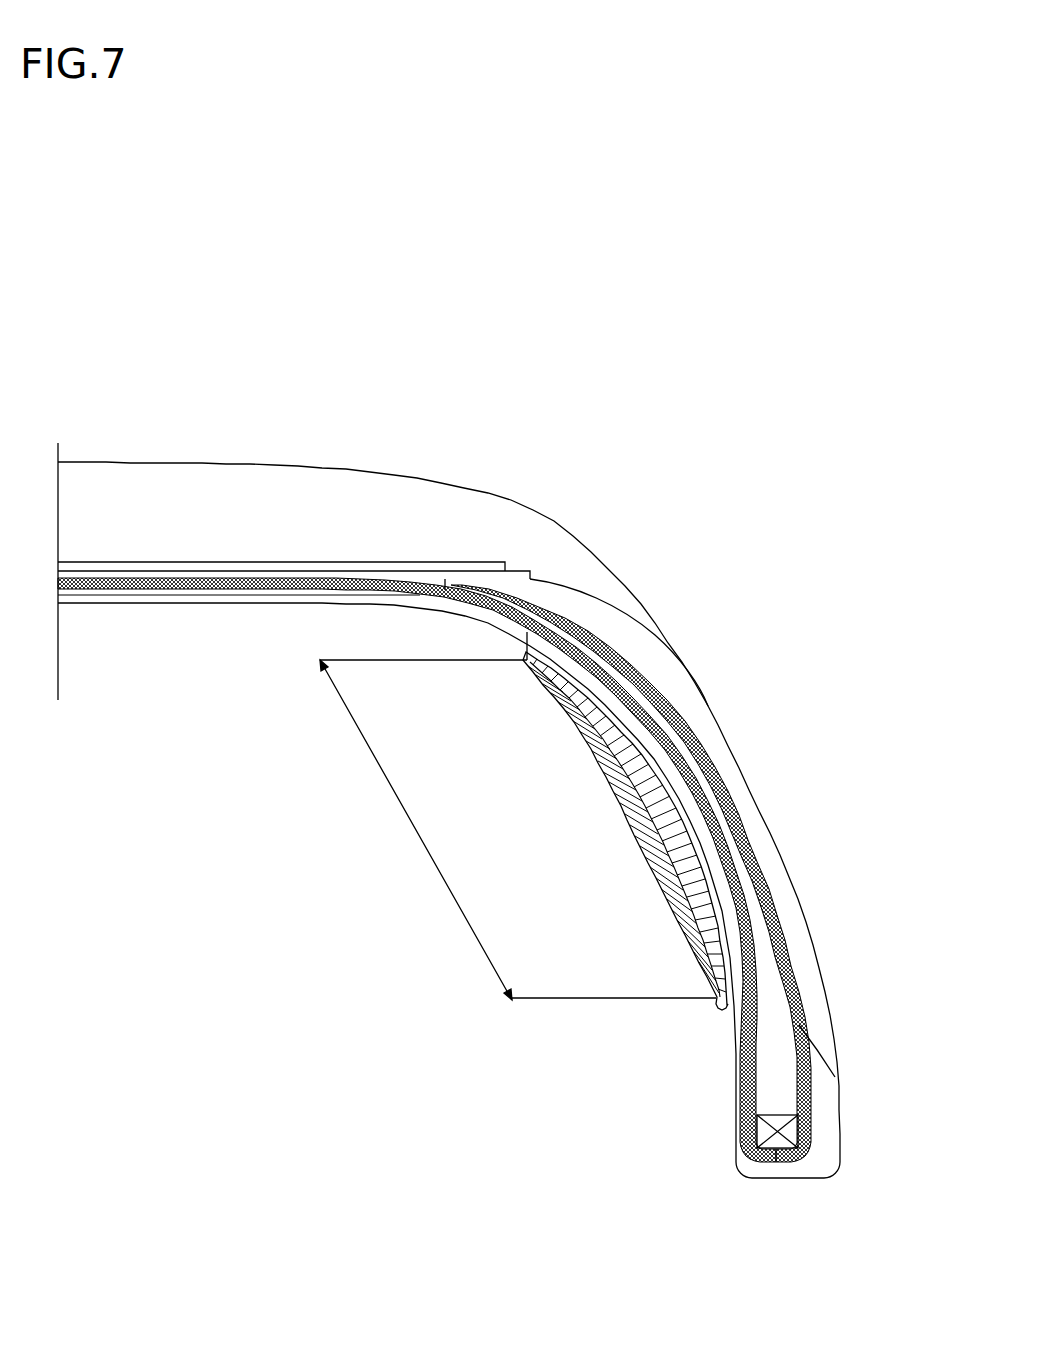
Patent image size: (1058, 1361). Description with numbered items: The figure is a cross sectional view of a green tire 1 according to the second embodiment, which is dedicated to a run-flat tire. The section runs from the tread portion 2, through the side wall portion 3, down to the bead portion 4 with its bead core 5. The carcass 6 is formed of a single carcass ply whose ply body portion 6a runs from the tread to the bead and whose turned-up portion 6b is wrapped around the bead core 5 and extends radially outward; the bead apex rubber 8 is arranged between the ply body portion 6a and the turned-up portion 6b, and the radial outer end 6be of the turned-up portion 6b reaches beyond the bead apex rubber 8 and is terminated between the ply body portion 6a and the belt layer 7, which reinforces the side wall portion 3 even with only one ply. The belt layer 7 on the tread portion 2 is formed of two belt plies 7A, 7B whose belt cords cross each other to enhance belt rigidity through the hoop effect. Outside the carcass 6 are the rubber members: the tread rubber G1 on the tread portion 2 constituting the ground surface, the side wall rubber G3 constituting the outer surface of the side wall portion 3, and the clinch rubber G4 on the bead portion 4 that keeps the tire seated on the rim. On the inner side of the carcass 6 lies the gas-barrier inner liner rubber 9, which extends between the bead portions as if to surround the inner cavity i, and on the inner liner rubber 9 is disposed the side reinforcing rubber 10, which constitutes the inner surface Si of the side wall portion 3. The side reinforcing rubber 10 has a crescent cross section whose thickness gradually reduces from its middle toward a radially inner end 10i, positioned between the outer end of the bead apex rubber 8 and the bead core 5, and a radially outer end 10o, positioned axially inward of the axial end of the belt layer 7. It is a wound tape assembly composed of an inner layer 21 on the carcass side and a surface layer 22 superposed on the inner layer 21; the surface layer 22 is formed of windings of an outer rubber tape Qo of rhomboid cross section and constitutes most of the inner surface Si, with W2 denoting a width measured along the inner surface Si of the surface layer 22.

The green tire 1 is at (583, 412).
The tread portion 2 is at (358, 420).
The side wall portion 3 is at (717, 633).
The bead portion 4 is at (711, 1139).
The bead core 5 is at (778, 1148).
The carcass 6 is at (472, 779).
The ply body portion 6a is at (742, 880).
The turned-up portion 6b is at (773, 917).
The radial outer end of the turned-up portion 6be is at (445, 589).
The belt layer 7 is at (294, 458).
The belt ply 7A is at (180, 579).
The belt ply 7B is at (120, 566).
The bead apex rubber 8 is at (762, 1058).
The inner liner rubber 9 is at (216, 603).
The side reinforcing rubber 10 is at (508, 832).
The radially outer end 10o is at (471, 632).
The radially inner end 10i is at (711, 1013).
The inner layer 21 is at (557, 688).
The surface layer 22 is at (583, 741).
The width W2 is at (518, 816).
The inner surface Si is at (617, 812).
The inner cavity i is at (245, 900).
The outer rubber tape Qo is at (648, 855).
The tread rubber G1 is at (268, 482).
The side wall rubber G3 is at (708, 707).
The clinch rubber G4 is at (826, 1110).